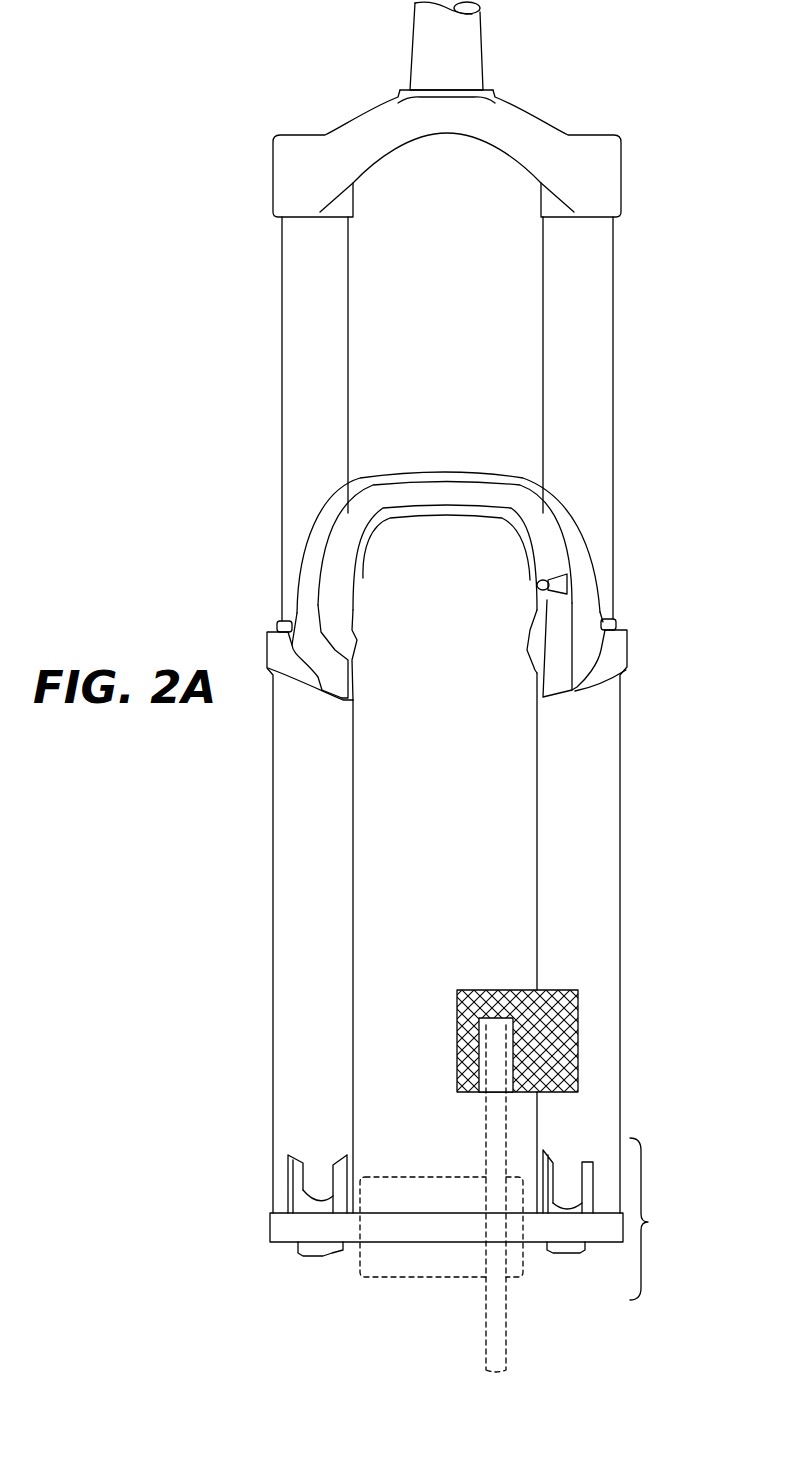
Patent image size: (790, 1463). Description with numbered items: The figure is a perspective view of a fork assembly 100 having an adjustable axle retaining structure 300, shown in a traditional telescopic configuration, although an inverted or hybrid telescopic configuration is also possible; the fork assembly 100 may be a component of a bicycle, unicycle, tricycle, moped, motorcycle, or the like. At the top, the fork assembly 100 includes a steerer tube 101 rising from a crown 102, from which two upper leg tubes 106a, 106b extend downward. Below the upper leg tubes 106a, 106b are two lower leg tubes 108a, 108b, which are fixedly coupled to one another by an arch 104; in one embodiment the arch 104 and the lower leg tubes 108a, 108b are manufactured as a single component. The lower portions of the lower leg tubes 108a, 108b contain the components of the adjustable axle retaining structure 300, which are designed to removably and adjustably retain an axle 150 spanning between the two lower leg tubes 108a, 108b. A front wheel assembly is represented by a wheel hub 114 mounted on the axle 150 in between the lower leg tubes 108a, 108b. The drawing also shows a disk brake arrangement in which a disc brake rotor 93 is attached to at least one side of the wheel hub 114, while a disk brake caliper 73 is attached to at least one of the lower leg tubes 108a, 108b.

The fork assembly 100 is at (340, 36).
The steerer tube 101 is at (483, 48).
The crown 102 is at (532, 118).
The arch 104 is at (423, 472).
The upper leg tube 106a is at (283, 401).
The upper leg tube 106b is at (613, 436).
The lower leg tube 108a is at (273, 808).
The lower leg tube 108b is at (620, 798).
The disk brake caliper 73 is at (510, 990).
The axle 150 is at (270, 1230).
The wheel hub 114 is at (405, 1277).
The disc brake rotor 93 is at (486, 1357).
The adjustable axle retaining structure 300 is at (661, 1219).